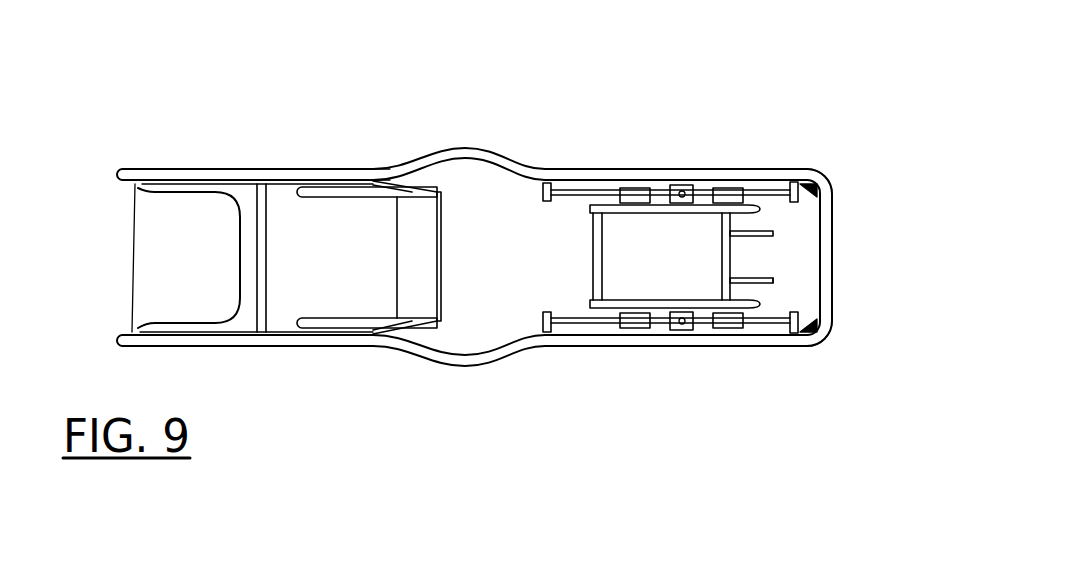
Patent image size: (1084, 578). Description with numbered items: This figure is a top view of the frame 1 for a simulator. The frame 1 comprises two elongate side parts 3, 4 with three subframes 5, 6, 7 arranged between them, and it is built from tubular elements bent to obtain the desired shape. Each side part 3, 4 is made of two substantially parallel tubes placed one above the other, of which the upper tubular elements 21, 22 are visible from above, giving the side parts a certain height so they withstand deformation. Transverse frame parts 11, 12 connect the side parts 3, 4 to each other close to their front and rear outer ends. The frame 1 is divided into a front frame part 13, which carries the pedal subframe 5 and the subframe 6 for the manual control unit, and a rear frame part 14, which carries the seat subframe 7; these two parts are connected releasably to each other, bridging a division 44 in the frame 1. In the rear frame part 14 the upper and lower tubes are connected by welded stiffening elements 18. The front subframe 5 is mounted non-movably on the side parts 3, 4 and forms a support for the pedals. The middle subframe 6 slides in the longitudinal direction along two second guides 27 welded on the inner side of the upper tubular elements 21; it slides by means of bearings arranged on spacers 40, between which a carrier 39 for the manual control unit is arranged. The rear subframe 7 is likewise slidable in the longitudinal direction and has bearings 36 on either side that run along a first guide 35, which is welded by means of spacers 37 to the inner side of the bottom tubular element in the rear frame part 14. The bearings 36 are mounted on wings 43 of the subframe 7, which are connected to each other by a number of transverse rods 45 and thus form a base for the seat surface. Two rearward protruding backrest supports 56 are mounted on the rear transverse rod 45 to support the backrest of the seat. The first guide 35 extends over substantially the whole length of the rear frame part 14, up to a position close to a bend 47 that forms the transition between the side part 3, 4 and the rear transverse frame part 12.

The frame 1 is at (848, 190).
The side part 3 is at (325, 350).
The side part 4 is at (323, 165).
The front subframe 5 is at (143, 300).
The middle subframe 6 is at (445, 262).
The rear subframe 7 is at (740, 262).
The front transverse frame part 11 is at (260, 268).
The rear transverse frame part 12 is at (827, 274).
The front frame part 13 is at (220, 155).
The rear frame part 14 is at (707, 148).
The stiffening elements 18 is at (812, 190).
The upper tubular element 21 is at (380, 171).
The upper tubular element 22 is at (755, 172).
The second guides 27 is at (283, 188).
The first guide 35 is at (595, 190).
The bearings 36 is at (720, 188).
The spacers 37 is at (542, 198).
The carrier 39 is at (425, 228).
The spacers 40 is at (416, 191).
The wings 43 is at (703, 212).
The division 44 is at (503, 164).
The transverse rods 45 is at (595, 290).
The bend 47 is at (808, 178).
The backrest supports 56 is at (775, 287).